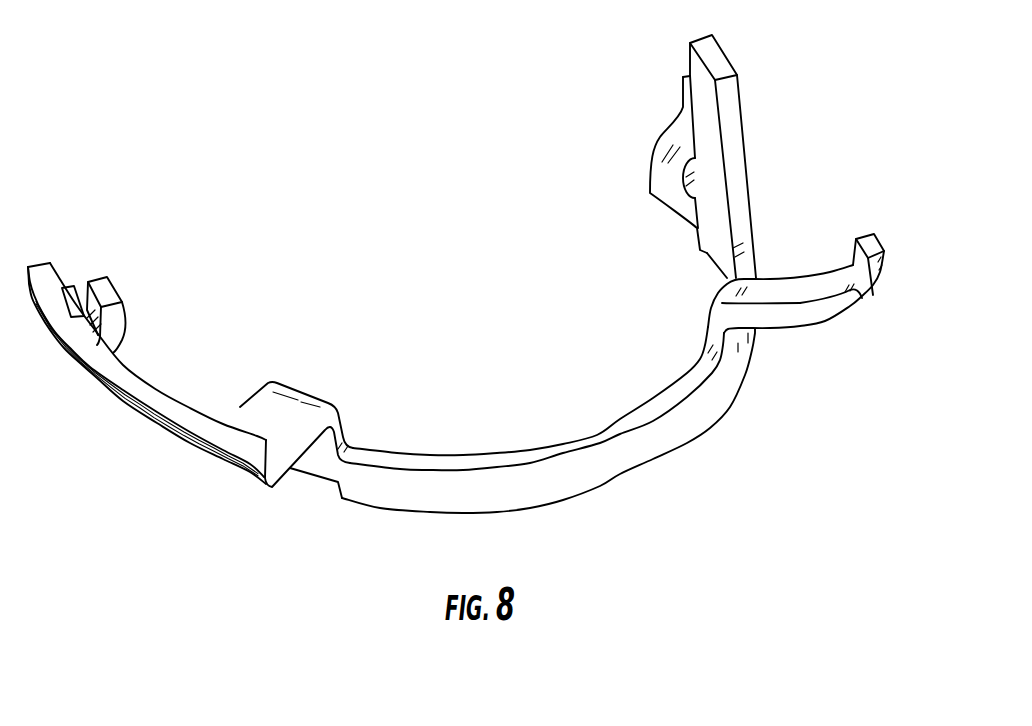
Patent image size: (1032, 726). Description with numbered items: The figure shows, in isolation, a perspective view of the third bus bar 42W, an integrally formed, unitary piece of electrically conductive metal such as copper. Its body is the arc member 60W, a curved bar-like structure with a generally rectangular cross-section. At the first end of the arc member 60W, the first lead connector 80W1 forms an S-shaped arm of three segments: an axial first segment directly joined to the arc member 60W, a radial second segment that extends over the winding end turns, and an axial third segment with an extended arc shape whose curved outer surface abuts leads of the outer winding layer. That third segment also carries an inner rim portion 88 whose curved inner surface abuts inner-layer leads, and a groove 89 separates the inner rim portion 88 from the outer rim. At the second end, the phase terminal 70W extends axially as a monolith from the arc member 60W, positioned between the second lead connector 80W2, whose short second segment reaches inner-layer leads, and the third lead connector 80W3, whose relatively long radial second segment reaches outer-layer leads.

The third bus bar 42W is at (473, 280).
The arc member 60W is at (548, 447).
The phase terminal 70W is at (685, 147).
The first lead connector 80W1 is at (145, 330).
The second lead connector 80W2 is at (641, 154).
The third lead connector 80W3 is at (884, 270).
The inner rim portion 88 is at (112, 286).
The groove 89 is at (80, 285).